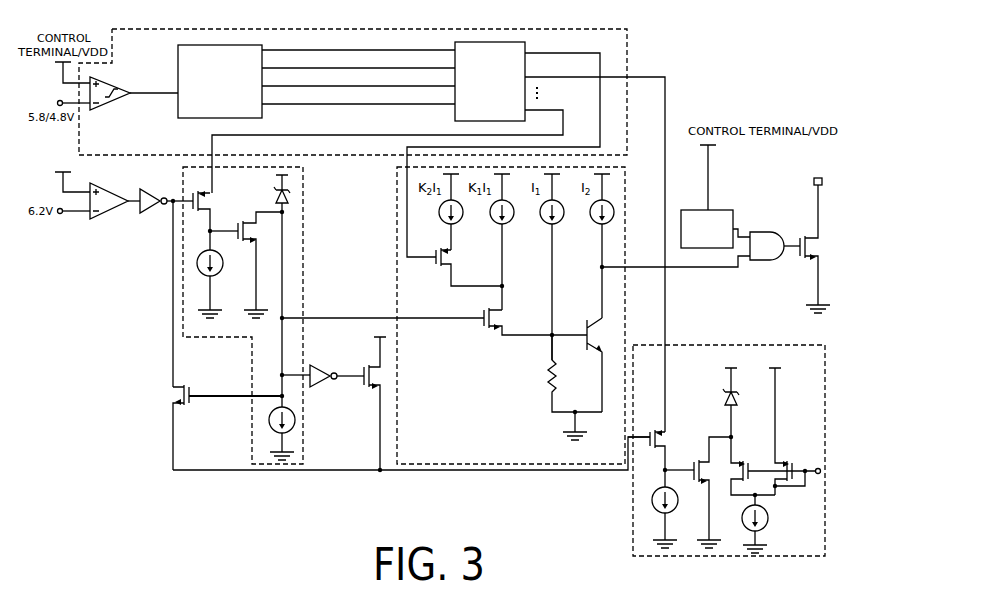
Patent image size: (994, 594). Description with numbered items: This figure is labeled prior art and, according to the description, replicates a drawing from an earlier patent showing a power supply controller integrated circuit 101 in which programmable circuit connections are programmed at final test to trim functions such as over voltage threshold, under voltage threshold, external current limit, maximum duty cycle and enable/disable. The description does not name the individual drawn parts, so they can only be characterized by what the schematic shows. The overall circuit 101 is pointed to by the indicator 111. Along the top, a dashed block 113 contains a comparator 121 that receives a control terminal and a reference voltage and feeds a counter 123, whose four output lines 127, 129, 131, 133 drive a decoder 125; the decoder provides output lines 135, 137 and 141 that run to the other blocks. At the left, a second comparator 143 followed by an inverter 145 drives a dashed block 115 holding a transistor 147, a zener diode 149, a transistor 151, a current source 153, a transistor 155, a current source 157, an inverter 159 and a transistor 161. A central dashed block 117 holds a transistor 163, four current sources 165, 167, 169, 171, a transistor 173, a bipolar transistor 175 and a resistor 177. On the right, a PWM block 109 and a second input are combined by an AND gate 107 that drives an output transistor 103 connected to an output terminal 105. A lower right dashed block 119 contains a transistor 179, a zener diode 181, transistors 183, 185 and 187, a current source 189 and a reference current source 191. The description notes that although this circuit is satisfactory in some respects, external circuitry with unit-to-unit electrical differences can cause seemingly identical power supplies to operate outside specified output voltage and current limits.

The circuit 101 is at (791, 27).
The output transistor 103 is at (820, 252).
The output terminal 105 is at (823, 178).
The AND gate 107 is at (768, 229).
The PWM circuit 109 is at (712, 206).
The protection circuit 111 is at (720, 60).
The counter/decoder circuit 113 is at (626, 53).
The reference circuit 115 is at (306, 263).
The current source circuit 117 is at (396, 293).
The bias circuit 119 is at (633, 480).
The comparator 121 is at (106, 76).
The counter 123 is at (176, 116).
The decoder 125 is at (456, 117).
The counter output line 127 is at (294, 47).
The counter output line 129 is at (294, 65).
The counter output line 131 is at (294, 83).
The counter output line 133 is at (294, 101).
The decoder output line 135 is at (540, 52).
The decoder output line 137 is at (540, 76).
The decoder output line 141 is at (545, 109).
The comparator 143 is at (106, 190).
The inverter 145 is at (140, 212).
The PMOS transistor 147 is at (215, 196).
The zener diode 149 is at (290, 192).
The NMOS transistor 151 is at (248, 222).
The current source 153 is at (222, 268).
The NMOS transistor 155 is at (180, 395).
The current source 157 is at (268, 418).
The inverter 159 is at (328, 365).
The NMOS transistor 161 is at (356, 389).
The PMOS transistor 163 is at (447, 261).
The current source K2I1 165 is at (443, 222).
The current source K1I1 167 is at (493, 222).
The current source I1 169 is at (543, 222).
The current source I2 171 is at (595, 222).
The NMOS transistor 173 is at (497, 319).
The bipolar transistor 175 is at (578, 326).
The resistor 177 is at (545, 373).
The PMOS transistor 179 is at (666, 432).
The zener diode 181 is at (720, 400).
The NMOS transistor 183 is at (698, 461).
The NMOS transistor 185 is at (748, 458).
The PMOS transistor 187 is at (796, 458).
The current source 189 is at (652, 508).
The reference current source IREF 191 is at (768, 532).